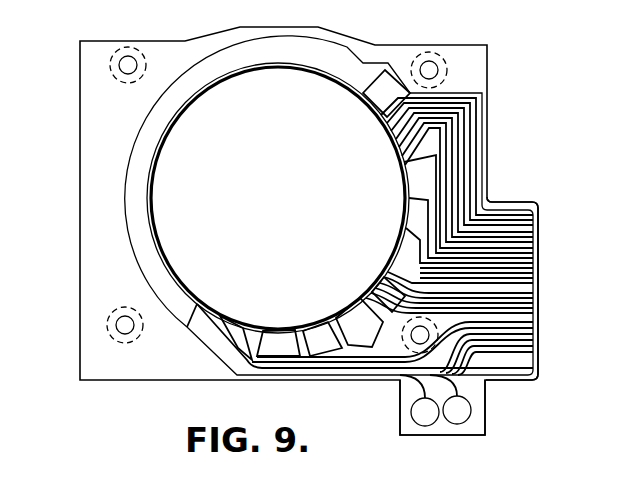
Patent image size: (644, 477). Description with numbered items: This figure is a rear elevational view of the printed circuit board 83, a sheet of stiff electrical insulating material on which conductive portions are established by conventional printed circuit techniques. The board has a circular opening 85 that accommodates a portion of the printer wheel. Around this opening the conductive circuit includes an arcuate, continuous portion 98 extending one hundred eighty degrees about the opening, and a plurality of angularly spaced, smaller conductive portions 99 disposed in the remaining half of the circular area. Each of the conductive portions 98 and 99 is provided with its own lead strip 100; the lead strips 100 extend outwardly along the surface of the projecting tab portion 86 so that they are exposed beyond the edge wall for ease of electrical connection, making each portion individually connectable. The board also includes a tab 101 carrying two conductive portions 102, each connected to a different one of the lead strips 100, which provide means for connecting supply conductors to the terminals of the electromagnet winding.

The printed circuit board 83 is at (78, 281).
The circular opening 85 is at (154, 204).
The projecting tab portion 86 is at (511, 204).
The arcuate continuous conductive portion 98 is at (141, 128).
The smaller conductive portions 99 is at (270, 340).
The lead strips 100 is at (536, 222).
The tab 101 is at (482, 404).
The conductive portions 102 is at (445, 423).